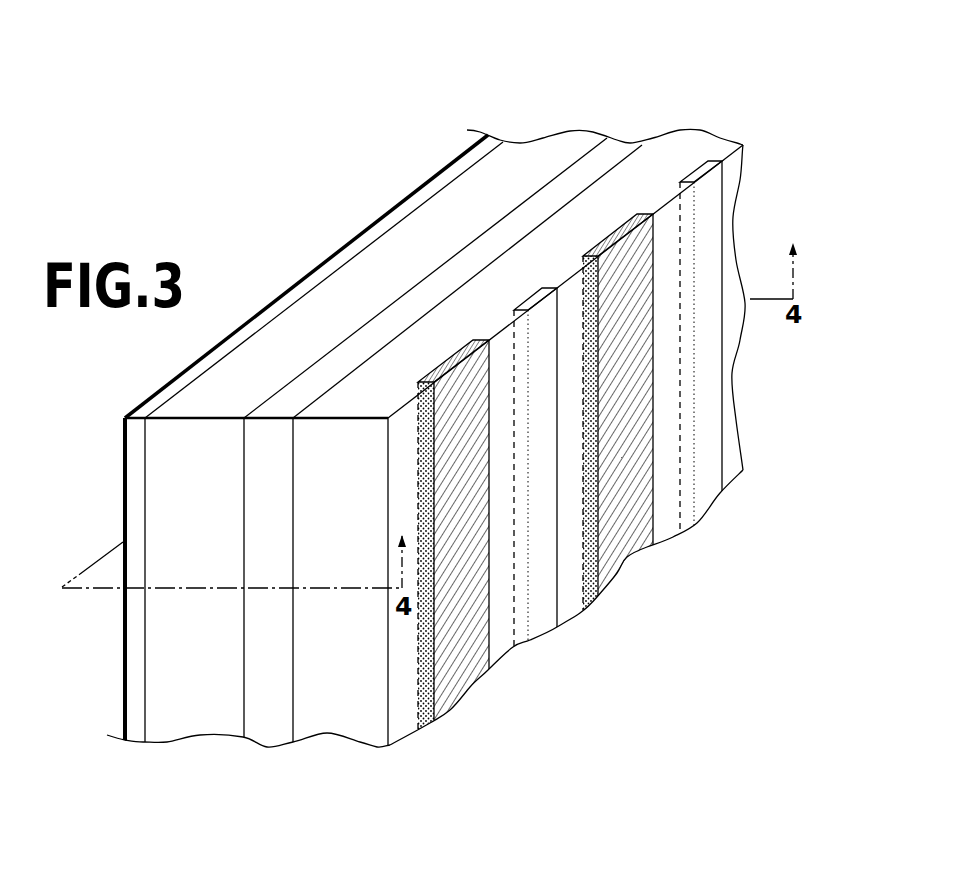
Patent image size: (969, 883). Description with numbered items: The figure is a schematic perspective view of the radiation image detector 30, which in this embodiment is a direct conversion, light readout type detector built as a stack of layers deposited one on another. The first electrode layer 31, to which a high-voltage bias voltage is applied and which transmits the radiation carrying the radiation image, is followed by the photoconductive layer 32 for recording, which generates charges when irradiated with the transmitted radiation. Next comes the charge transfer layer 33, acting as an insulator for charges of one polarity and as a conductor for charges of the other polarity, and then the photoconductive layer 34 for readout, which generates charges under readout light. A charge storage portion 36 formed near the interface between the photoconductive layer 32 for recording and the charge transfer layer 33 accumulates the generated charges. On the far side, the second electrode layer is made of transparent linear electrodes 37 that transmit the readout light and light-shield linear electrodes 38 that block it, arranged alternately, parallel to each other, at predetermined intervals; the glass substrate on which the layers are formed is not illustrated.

The radiation image detector 30 is at (642, 86).
The first electrode layer 31 is at (138, 728).
The photoconductive layer for recording 32 is at (172, 722).
The charge transfer layer 33 is at (272, 723).
The photoconductive layer for readout 34 is at (337, 727).
The charge storage portion 36 is at (240, 722).
The transparent linear electrodes 37 is at (545, 622).
The light-shield linear electrodes 38 is at (467, 687).